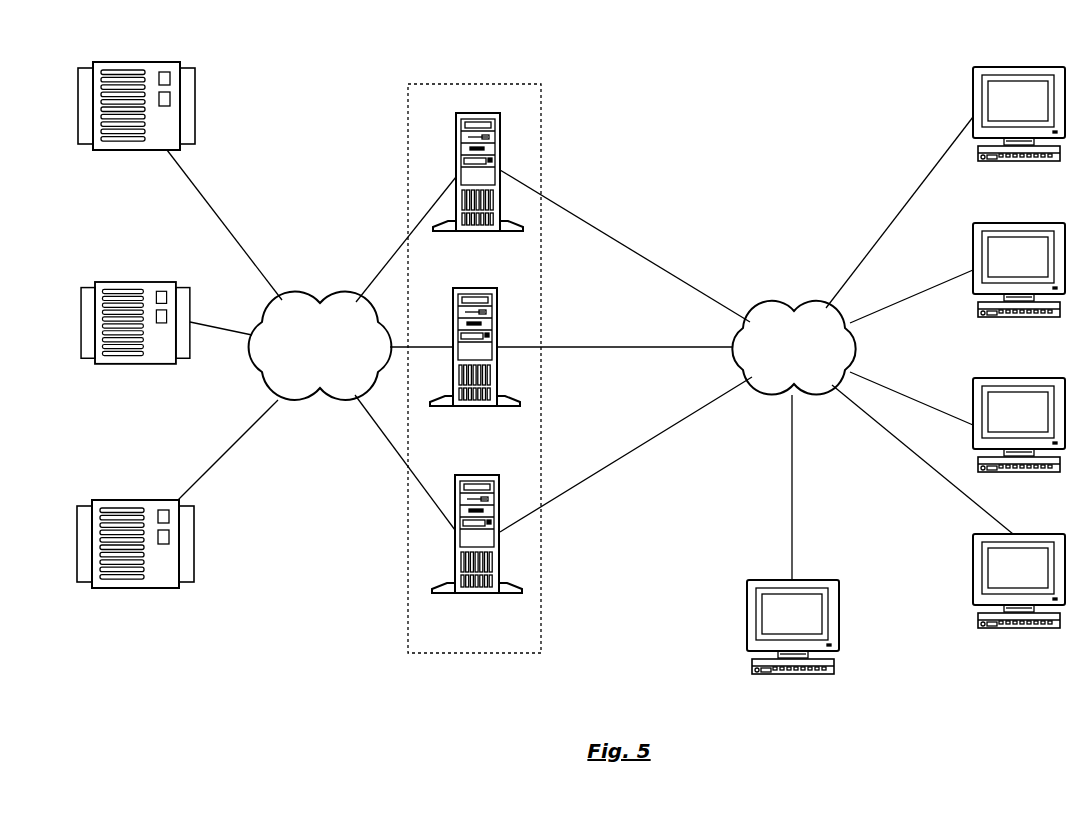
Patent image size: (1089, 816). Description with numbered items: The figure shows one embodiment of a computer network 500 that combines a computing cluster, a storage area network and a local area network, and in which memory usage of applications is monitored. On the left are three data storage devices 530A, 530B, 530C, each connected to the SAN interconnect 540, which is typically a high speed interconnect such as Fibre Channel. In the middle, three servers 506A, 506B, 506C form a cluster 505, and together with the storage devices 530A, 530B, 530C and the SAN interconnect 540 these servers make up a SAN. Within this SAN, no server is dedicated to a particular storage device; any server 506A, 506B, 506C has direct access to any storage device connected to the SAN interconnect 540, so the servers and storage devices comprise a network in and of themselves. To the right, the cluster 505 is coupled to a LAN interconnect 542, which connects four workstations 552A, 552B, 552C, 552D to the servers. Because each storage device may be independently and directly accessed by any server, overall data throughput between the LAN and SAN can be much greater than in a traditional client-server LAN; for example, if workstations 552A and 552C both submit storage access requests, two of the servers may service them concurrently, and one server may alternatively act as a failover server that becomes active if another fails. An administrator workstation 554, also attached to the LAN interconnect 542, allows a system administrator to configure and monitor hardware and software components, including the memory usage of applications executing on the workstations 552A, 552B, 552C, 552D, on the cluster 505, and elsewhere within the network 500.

The computer network 500 is at (660, 66).
The cluster 505 is at (407, 615).
The server 506A is at (478, 186).
The server 506B is at (475, 361).
The server 506C is at (477, 548).
The data storage device 530A is at (136, 121).
The data storage device 530B is at (135, 338).
The data storage device 530C is at (135, 559).
The SAN interconnect 540 is at (320, 345).
The LAN interconnect 542 is at (793, 348).
The workstation 552A is at (1019, 128).
The workstation 552B is at (1019, 284).
The workstation 552C is at (1019, 439).
The workstation 552D is at (1019, 594).
The administrator workstation 554 is at (793, 641).